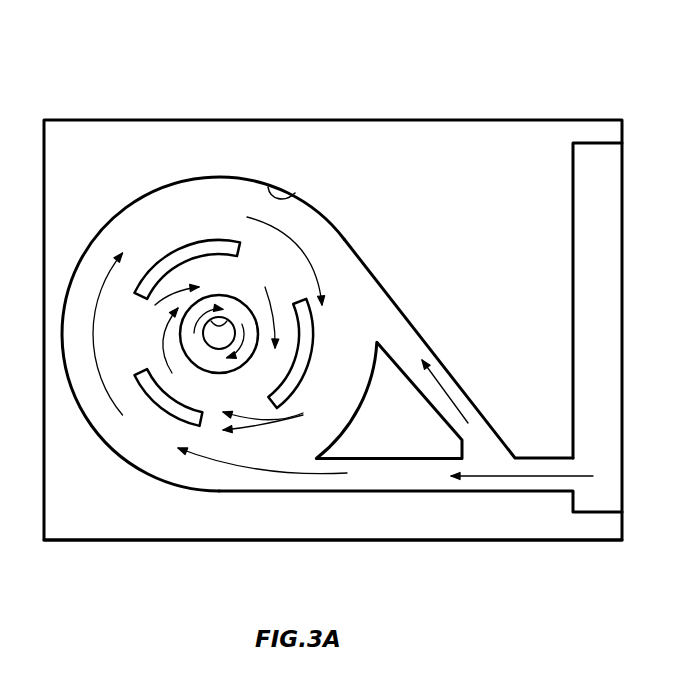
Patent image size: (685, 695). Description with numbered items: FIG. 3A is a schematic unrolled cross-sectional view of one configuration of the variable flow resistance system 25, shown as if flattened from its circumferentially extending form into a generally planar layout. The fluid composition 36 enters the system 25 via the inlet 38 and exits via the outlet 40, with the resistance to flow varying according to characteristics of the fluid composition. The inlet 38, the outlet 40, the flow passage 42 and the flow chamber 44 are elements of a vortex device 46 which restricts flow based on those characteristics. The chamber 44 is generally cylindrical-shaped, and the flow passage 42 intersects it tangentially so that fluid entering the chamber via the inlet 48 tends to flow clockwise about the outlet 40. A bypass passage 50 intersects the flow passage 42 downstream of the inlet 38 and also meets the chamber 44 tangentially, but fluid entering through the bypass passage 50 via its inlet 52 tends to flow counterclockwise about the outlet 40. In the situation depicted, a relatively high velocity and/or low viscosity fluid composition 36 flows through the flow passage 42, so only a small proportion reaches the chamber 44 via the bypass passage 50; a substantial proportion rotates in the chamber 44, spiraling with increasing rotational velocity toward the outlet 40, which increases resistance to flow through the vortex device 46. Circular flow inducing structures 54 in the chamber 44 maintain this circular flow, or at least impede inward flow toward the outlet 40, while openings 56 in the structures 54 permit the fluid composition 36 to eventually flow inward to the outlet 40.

The variable flow resistance system 25 is at (397, 83).
The fluid composition 36 is at (282, 230).
The inlet 38 is at (595, 207).
The outlet 40 is at (218, 324).
The flow passage 42 is at (398, 492).
The flow chamber 44 is at (293, 195).
The vortex device 46 is at (230, 507).
The inlet 48 is at (337, 437).
The bypass passage 50 is at (418, 332).
The inlet 52 is at (380, 325).
The circular flow inducing structures 54 is at (158, 257).
The openings 56 is at (241, 245).